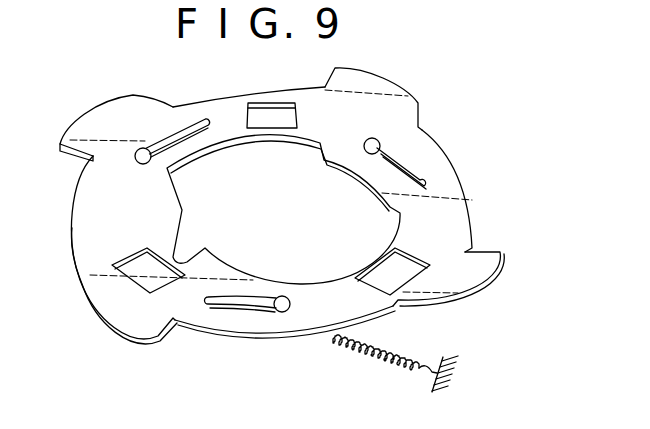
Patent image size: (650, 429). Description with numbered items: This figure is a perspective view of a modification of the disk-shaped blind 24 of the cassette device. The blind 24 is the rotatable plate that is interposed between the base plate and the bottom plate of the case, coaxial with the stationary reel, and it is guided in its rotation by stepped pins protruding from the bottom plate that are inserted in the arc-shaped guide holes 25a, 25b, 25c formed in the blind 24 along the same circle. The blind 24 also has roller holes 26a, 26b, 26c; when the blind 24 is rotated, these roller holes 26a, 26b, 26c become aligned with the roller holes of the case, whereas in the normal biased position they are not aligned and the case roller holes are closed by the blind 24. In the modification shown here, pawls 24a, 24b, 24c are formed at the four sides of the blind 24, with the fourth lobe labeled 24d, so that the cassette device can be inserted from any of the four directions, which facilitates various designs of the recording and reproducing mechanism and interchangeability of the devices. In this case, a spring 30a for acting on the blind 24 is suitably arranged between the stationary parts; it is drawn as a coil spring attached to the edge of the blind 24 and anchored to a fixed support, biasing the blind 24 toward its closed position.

The blind 24 is at (520, 219).
The pawl 24a is at (108, 303).
The pawl 24b is at (110, 100).
The pawl 24c is at (407, 97).
The plate lobe 24d is at (461, 290).
The arc-shaped guide hole 25a is at (251, 315).
The arc-shaped guide hole 25b is at (176, 126).
The arc-shaped guide hole 25c is at (417, 167).
The roller hole 26a is at (382, 268).
The roller hole 26b is at (143, 248).
The roller hole 26c is at (272, 102).
The spring 30a is at (372, 357).